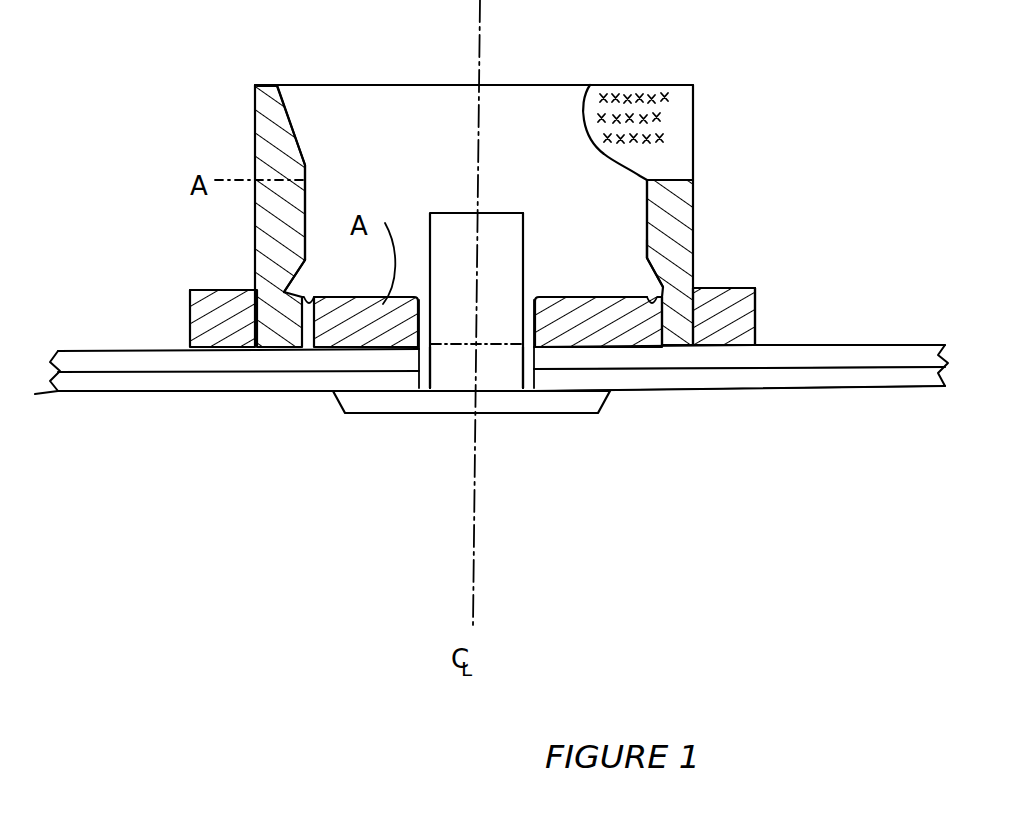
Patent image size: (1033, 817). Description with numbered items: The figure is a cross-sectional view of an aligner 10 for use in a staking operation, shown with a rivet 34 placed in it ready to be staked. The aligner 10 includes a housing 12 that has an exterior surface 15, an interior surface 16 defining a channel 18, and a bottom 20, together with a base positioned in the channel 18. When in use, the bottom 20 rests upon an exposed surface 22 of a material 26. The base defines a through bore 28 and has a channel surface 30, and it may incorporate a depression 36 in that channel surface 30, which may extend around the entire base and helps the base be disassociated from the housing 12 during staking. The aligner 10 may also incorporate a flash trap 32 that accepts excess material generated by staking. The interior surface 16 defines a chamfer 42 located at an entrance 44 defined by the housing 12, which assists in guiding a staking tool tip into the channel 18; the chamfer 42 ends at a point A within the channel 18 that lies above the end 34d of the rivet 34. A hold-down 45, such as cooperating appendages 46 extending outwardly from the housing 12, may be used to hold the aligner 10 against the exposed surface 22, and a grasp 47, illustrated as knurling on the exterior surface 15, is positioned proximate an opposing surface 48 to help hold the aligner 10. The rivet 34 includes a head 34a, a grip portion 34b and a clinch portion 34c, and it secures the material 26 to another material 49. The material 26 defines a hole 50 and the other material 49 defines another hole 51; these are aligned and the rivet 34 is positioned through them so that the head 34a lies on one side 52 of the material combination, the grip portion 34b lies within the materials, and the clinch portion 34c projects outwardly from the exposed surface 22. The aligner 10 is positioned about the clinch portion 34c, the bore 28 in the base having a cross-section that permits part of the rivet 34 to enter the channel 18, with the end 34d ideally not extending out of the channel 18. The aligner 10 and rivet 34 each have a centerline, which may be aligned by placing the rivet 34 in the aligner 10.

The aligner 10 is at (728, 120).
The housing 12 is at (695, 201).
The exterior surface 15 is at (255, 145).
The interior surface 16 is at (307, 187).
The channel 18 is at (567, 108).
The bottom 20 is at (695, 287).
The exposed surface 22 is at (788, 346).
The material 26 is at (128, 358).
The through bore 28 is at (547, 297).
The channel surface 30 is at (568, 297).
The flash trap 32 is at (305, 262).
The rivet 34 is at (472, 340).
The head 34a is at (568, 403).
The grip portion 34b is at (457, 372).
The clinch portion 34c is at (450, 228).
The end 34d is at (510, 183).
The depression 36 is at (313, 303).
The chamfer 42 is at (292, 118).
The entrance 44 is at (635, 83).
The hold-down 45 is at (200, 310).
The cooperating appendages 46 is at (207, 295).
The grasp 47 is at (667, 108).
The opposing surface 48 is at (268, 88).
The other material 49 is at (825, 380).
The hole 50 is at (427, 355).
The other hole 51 is at (533, 380).
The one side 52 is at (720, 397).